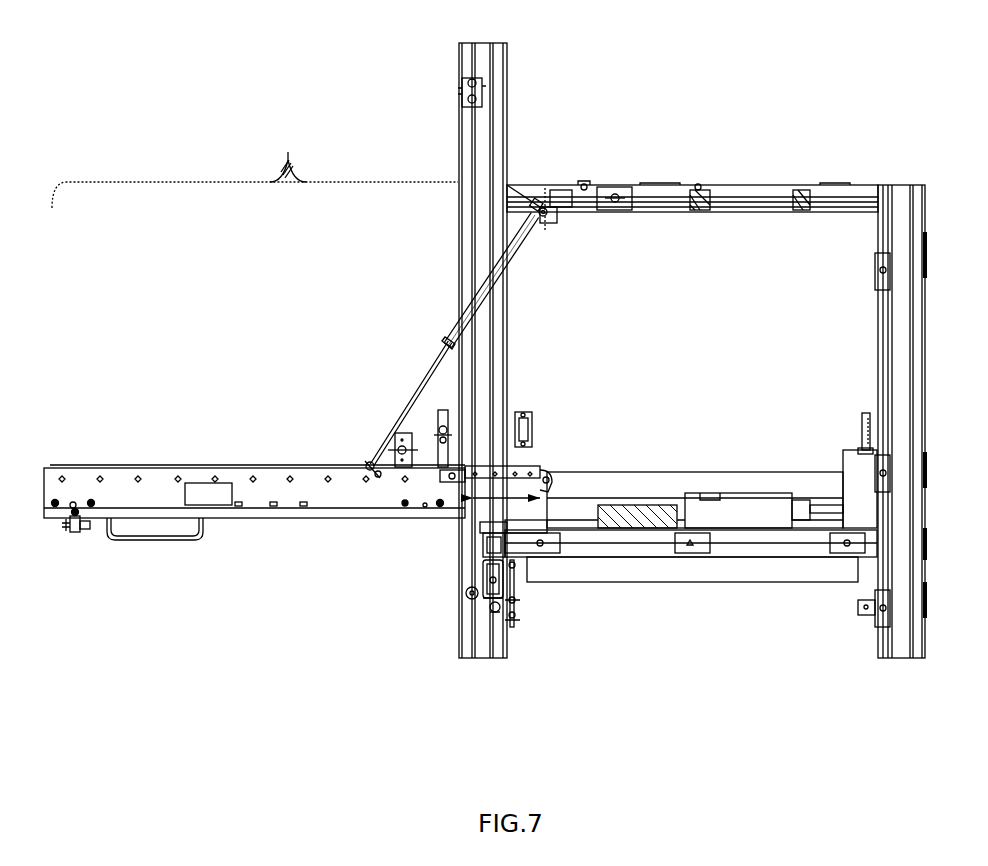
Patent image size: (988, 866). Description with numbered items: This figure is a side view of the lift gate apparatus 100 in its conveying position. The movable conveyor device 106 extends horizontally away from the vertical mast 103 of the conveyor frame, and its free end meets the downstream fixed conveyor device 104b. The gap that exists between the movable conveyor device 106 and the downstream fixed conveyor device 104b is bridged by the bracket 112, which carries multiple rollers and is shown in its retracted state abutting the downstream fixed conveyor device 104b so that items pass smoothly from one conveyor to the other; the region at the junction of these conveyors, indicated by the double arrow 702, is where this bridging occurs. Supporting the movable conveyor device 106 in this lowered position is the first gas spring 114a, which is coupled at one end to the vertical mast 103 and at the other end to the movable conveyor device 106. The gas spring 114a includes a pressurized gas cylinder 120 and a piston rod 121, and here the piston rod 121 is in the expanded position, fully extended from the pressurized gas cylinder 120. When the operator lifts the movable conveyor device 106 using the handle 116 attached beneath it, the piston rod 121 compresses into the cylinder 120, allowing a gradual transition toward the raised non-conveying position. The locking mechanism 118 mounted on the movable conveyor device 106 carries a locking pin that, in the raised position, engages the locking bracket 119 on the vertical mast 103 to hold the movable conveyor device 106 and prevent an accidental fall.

The lift gate apparatus 100 is at (255, 168).
The vertical mast 103 is at (486, 60).
The locking bracket 119 is at (481, 88).
The first gas spring 114a is at (527, 225).
The pressurized gas cylinder 120 is at (452, 328).
The piston rod 121 is at (408, 396).
The movable conveyor device 106 is at (235, 448).
The bracket 112 is at (517, 462).
The downstream fixed conveyor device 104b is at (714, 460).
The gap / translation direction 702 is at (508, 503).
The locking mechanism 118 is at (84, 532).
The handle 116 is at (205, 531).